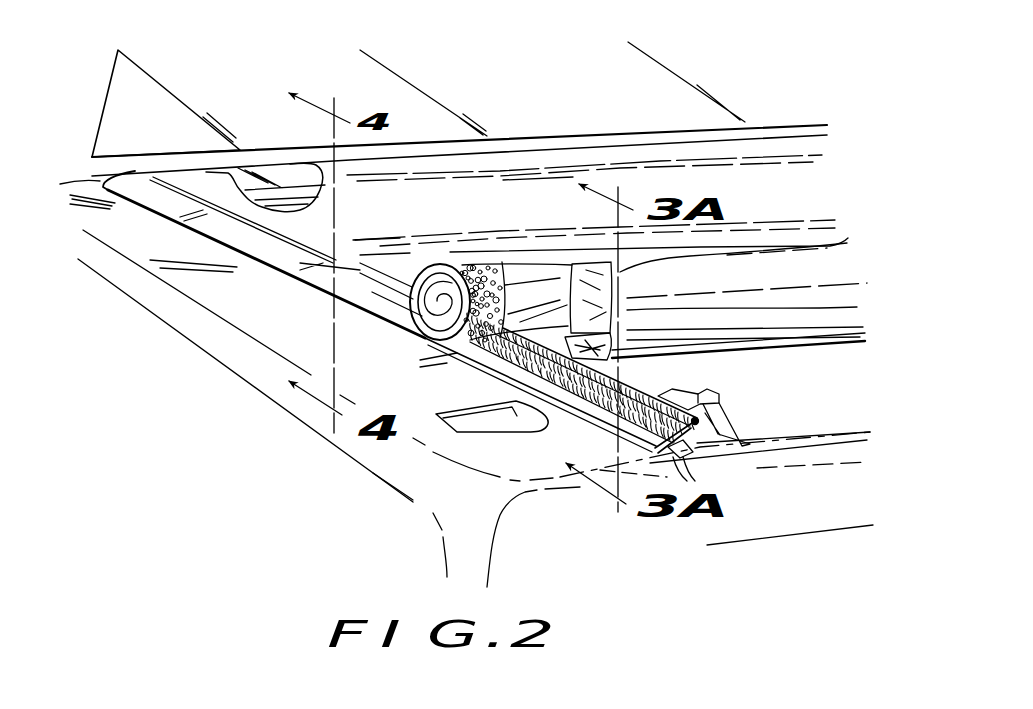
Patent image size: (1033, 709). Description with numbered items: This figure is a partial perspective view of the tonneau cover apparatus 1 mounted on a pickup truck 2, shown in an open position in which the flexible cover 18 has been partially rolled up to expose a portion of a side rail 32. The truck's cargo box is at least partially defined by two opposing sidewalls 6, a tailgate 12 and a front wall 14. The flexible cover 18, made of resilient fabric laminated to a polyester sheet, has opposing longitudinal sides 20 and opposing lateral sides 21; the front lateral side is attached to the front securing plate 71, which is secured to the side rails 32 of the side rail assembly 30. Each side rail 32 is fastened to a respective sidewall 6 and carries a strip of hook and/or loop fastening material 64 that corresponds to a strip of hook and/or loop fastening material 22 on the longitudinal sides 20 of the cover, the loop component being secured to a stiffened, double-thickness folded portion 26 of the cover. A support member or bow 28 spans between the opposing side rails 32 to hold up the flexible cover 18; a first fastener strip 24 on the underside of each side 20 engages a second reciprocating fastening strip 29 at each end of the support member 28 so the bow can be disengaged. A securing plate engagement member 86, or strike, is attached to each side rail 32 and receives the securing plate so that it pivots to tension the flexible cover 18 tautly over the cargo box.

The tonneau cover apparatus 1 is at (191, 186).
The pickup truck 2 is at (327, 470).
The sidewall 6 is at (186, 348).
The tailgate 12 is at (768, 561).
The front wall 14 is at (521, 148).
The flexible cover 18 is at (803, 199).
The longitudinal side 20 is at (327, 293).
The lateral side 21 is at (647, 148).
The hook and/or loop fastening material strip 22 is at (458, 263).
The first hook and/or loop fastener strip 24 is at (688, 348).
The stiffened portion 26 is at (515, 284).
The support member 28 is at (745, 327).
The second hook and/or loop fastening strip 29 is at (614, 362).
The side rail assembly 30 is at (746, 429).
The side rail 32 is at (682, 452).
The hook and/or loop fastening material strip 64 is at (600, 421).
The front securing plate 71 is at (288, 173).
The securing plate engagement member 86 is at (720, 404).